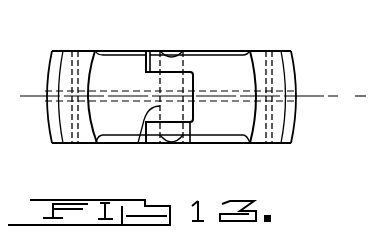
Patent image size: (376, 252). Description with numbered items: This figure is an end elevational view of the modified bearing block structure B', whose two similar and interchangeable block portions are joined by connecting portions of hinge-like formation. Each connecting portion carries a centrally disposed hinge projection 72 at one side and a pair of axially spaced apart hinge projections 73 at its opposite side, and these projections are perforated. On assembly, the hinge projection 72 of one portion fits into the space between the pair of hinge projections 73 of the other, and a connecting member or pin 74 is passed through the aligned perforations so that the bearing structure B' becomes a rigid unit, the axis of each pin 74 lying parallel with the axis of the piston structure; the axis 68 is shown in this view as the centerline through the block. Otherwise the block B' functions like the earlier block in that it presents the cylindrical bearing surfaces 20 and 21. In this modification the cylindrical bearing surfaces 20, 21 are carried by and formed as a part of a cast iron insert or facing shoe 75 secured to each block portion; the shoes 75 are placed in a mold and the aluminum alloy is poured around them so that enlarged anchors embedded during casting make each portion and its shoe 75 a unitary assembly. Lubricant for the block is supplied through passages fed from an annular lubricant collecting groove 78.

The cylindrical bearing surface 20 is at (50, 76).
The cylindrical bearing surface 21 is at (290, 56).
The axis 68 is at (353, 80).
The hinge projection 72 is at (138, 143).
The hinge projections 73 is at (153, 51).
The connecting member or pin 74 is at (178, 51).
The cast iron insert or facing shoe 75 is at (279, 144).
The annular lubricant collecting groove 78 is at (125, 84).
The bearing block structure B' is at (209, 78).